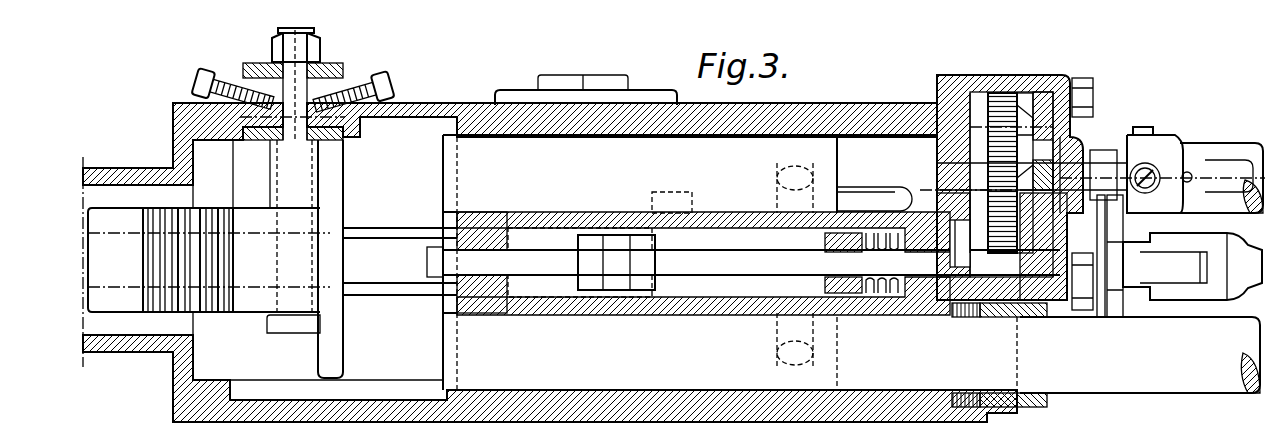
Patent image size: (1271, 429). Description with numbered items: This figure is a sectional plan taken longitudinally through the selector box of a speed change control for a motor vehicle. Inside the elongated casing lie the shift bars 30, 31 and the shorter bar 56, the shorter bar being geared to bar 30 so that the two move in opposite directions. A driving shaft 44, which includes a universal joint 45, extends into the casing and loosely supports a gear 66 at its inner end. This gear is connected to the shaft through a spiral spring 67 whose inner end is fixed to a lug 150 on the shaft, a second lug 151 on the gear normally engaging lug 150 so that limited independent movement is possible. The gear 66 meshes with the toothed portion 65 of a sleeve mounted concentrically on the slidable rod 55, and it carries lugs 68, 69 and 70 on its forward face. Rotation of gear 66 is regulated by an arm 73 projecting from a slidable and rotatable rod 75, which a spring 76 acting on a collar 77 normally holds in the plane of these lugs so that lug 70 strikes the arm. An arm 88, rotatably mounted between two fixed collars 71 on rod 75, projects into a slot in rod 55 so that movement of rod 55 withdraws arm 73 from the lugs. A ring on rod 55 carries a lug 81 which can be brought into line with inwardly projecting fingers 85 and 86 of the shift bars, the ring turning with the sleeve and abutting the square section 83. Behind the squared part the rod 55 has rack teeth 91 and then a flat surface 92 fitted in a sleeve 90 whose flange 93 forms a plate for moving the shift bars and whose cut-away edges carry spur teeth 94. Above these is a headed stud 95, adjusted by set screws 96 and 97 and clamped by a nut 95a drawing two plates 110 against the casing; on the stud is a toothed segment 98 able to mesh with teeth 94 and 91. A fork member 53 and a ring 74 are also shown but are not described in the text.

The shift bar 30 is at (1197, 370).
The shift bar 31 is at (1208, 143).
The shaft 44 is at (1232, 165).
The universal joint 45 is at (1156, 146).
The fork arm 53 is at (1239, 266).
The rod 55 is at (1192, 266).
The shift bar 56 is at (447, 172).
The toothed portion 65 is at (1005, 320).
The gear 66 is at (1002, 95).
The spiral spring 67 is at (1045, 143).
The lug 68 is at (1093, 101).
The lug 69 is at (1028, 176).
The lug 70 is at (1035, 228).
The fixed collar 71 is at (590, 240).
The arm 73 is at (1021, 174).
The ring 74 is at (961, 243).
The rod 75 is at (738, 256).
The spring 76 is at (882, 287).
The collar 77 is at (850, 225).
The lug 81 is at (693, 193).
The square section 83 is at (388, 270).
The finger 85 is at (812, 290).
The finger 86 is at (810, 233).
The arm 88 is at (628, 240).
The sleeve 90 is at (132, 300).
The teeth 91 is at (205, 260).
The flat surface 92 is at (188, 260).
The flange 93 is at (343, 343).
The spur teeth 94 is at (172, 210).
The headed stud 95 is at (293, 330).
The nut 95a is at (300, 48).
The set screw 96 is at (392, 80).
The set screw 97 is at (204, 70).
The toothed segment 98 is at (253, 213).
The plate 110 is at (345, 65).
The lug 150 is at (1097, 240).
The lug 151 is at (1060, 162).